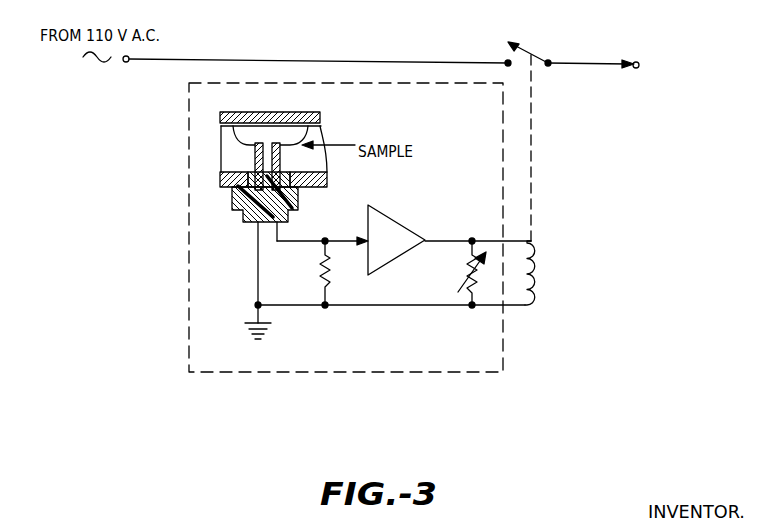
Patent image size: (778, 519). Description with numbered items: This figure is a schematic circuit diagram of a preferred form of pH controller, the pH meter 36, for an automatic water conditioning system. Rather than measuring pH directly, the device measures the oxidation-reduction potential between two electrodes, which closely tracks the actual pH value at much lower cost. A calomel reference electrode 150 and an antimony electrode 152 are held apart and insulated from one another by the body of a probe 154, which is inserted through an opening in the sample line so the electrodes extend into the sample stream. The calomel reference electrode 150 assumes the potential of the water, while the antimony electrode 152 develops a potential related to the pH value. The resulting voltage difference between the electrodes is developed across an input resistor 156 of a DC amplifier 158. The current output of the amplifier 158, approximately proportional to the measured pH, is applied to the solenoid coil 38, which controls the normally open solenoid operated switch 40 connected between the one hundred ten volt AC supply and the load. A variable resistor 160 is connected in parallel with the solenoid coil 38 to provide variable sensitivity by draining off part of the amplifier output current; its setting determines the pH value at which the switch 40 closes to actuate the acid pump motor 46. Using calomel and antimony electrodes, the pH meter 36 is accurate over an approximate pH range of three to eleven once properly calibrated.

The pH meter 36 is at (214, 276).
The solenoid coil 38 is at (540, 272).
The normally open solenoid operated switch 40 is at (528, 49).
The acid pump motor 46 is at (692, 80).
The calomel reference electrode 150 is at (221, 136).
The antimony electrode 152 is at (316, 129).
The probe 154 is at (298, 212).
The input resistor 156 is at (320, 265).
The DC amplifier 158 is at (397, 222).
The variable resistor 160 is at (462, 268).